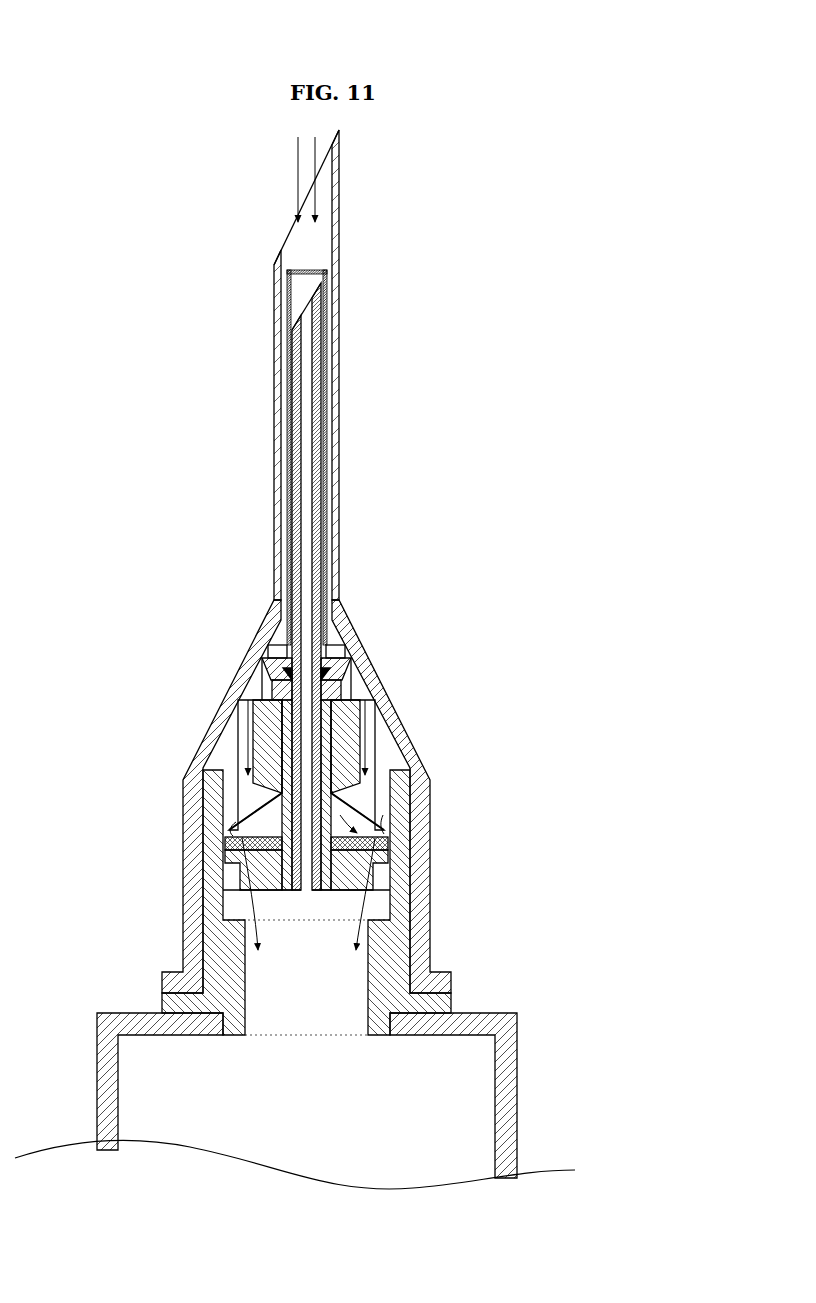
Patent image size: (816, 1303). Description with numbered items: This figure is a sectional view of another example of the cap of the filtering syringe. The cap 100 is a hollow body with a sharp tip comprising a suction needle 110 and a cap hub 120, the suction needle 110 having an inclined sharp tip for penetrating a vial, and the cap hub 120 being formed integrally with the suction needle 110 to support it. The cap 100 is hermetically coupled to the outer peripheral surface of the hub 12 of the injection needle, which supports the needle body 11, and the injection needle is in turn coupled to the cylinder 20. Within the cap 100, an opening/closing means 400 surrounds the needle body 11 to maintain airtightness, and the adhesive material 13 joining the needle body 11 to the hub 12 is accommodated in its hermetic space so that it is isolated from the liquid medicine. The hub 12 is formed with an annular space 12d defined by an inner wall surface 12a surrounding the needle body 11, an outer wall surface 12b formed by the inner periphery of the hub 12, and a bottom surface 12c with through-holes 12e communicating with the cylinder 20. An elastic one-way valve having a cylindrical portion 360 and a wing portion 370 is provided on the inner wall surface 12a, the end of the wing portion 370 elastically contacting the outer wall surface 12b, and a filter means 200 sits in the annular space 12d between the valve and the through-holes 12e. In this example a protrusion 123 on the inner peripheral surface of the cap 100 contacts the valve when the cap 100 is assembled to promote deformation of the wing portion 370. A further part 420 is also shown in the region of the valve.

The suction needle 110 is at (339, 218).
The opening/closing means 400 is at (303, 268).
The needle body 11 is at (307, 372).
The cap 100 is at (386, 594).
The cap hub 120 is at (423, 935).
The cylinder 20 is at (507, 1130).
The protrusion 123 is at (253, 686).
The adhesive material 13 is at (287, 673).
The ring 420 is at (342, 653).
The cylindrical portion 360 is at (270, 738).
The filter means 200 is at (230, 845).
The wing portion 370 is at (372, 815).
The hub 12 is at (213, 883).
The inner wall surface 12a is at (282, 820).
The outer wall surface 12b is at (373, 762).
The bottom surface 12c is at (377, 857).
The annular space 12d is at (395, 822).
The through-holes 12e is at (367, 880).